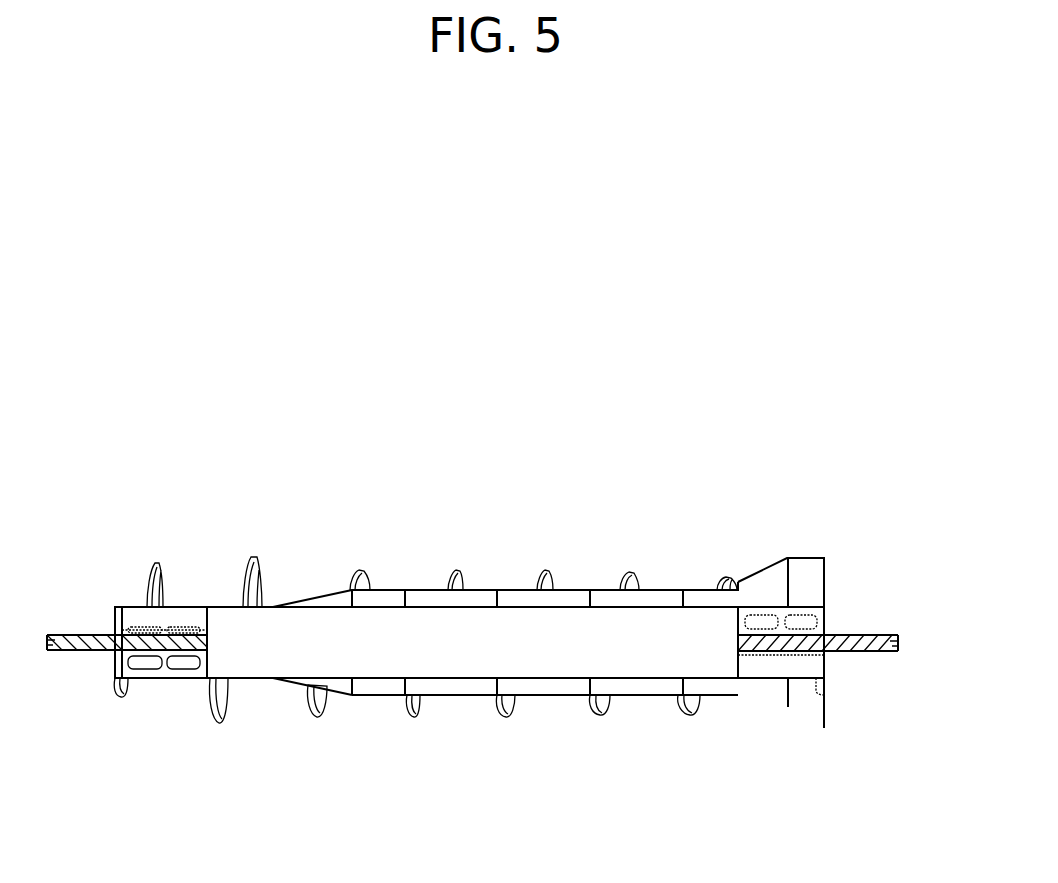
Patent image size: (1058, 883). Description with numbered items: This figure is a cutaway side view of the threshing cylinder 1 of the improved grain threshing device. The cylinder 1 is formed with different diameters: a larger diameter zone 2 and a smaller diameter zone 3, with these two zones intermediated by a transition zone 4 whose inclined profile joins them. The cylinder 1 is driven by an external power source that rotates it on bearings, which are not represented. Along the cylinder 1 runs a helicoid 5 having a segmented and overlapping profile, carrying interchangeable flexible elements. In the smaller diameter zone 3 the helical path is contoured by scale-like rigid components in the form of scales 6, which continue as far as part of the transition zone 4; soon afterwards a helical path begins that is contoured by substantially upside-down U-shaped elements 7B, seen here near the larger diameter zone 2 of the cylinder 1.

The cylinder 1 is at (472, 669).
The larger diameter zone 2 is at (442, 592).
The smaller diameter zone 3 is at (176, 682).
The transition zone 4 is at (318, 595).
The helicoid 5 is at (558, 558).
The scales 6 is at (255, 568).
The upside-down U-shaped elements 7B is at (730, 580).